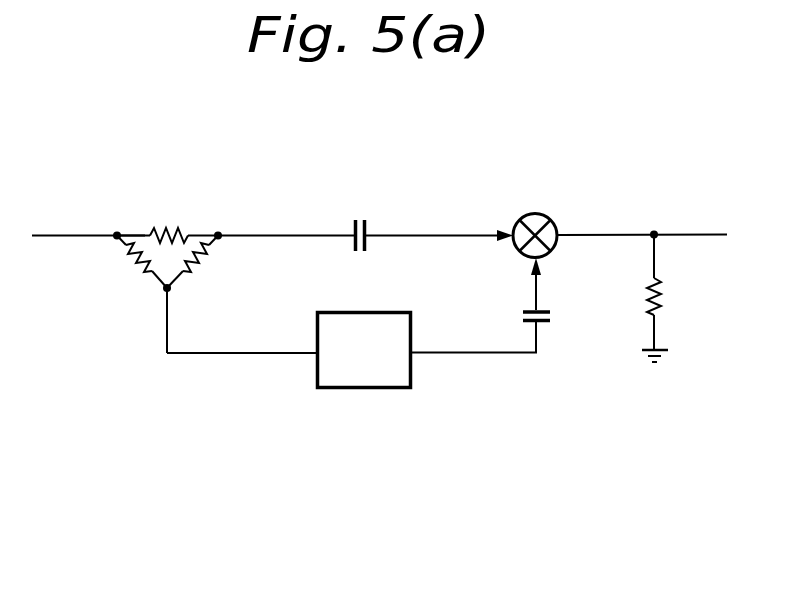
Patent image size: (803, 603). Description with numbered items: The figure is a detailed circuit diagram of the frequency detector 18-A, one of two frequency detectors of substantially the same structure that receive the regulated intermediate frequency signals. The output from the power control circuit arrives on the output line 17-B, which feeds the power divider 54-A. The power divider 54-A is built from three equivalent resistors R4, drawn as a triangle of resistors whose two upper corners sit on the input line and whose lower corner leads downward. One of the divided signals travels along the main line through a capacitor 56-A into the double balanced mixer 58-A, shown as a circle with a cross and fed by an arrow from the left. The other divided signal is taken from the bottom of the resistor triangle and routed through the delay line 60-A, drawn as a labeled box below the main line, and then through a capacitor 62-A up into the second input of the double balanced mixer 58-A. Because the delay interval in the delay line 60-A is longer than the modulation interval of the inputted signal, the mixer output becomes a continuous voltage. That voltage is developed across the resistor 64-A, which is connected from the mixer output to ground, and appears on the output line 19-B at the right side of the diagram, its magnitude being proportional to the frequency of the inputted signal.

The output line 17-B is at (58, 235).
The power divider 54-A is at (190, 236).
The resistor R4 is at (166, 253).
The capacitor 56-A is at (361, 217).
The double balanced mixer 58-A is at (545, 213).
The capacitor 62-A is at (546, 325).
The delay line 60-A is at (356, 390).
The resistor 64-A is at (705, 306).
The output line 19-B is at (710, 233).
The frequency detector 18-A is at (712, 486).